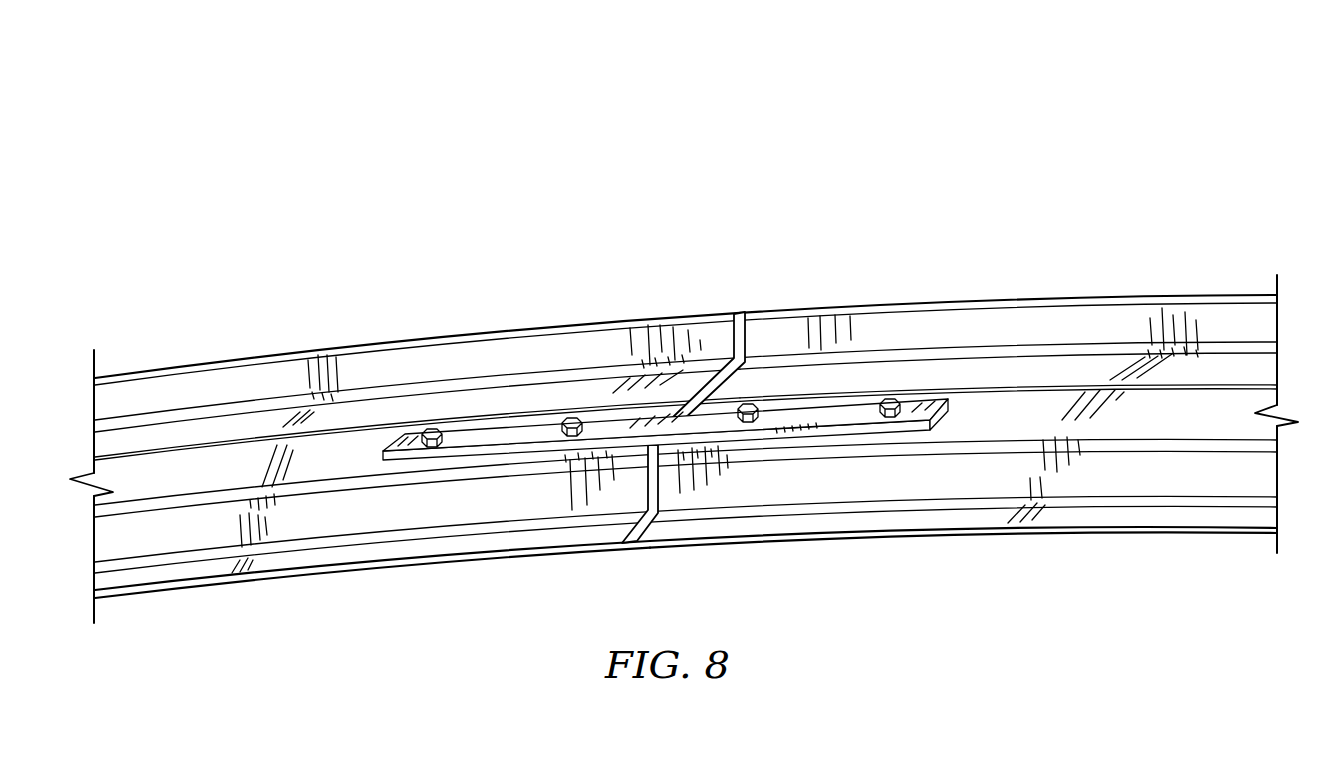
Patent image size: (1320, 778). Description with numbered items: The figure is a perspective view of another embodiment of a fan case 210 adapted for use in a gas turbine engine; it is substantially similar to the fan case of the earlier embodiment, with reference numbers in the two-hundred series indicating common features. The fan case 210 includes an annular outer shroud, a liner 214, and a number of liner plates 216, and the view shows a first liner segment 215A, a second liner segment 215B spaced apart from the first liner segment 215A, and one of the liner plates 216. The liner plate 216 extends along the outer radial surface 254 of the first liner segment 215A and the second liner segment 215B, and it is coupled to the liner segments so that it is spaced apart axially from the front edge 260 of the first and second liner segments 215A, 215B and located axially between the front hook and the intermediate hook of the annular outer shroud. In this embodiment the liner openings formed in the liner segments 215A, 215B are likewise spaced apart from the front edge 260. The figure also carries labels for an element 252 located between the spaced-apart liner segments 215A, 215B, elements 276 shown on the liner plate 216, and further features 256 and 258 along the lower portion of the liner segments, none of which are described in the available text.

The fan case 210 is at (1078, 158).
The liner 214 is at (824, 262).
The first liner segment 215A is at (537, 316).
The second liner segment 215B is at (979, 285).
The splice joint 252 is at (742, 303).
The liner plate 216 is at (855, 446).
The fasteners 276 is at (430, 428).
The outer radial surface 254 is at (328, 558).
The rail bottom flange 256 is at (275, 577).
The rail lower lip 258 is at (487, 552).
The front edge 260 is at (412, 550).